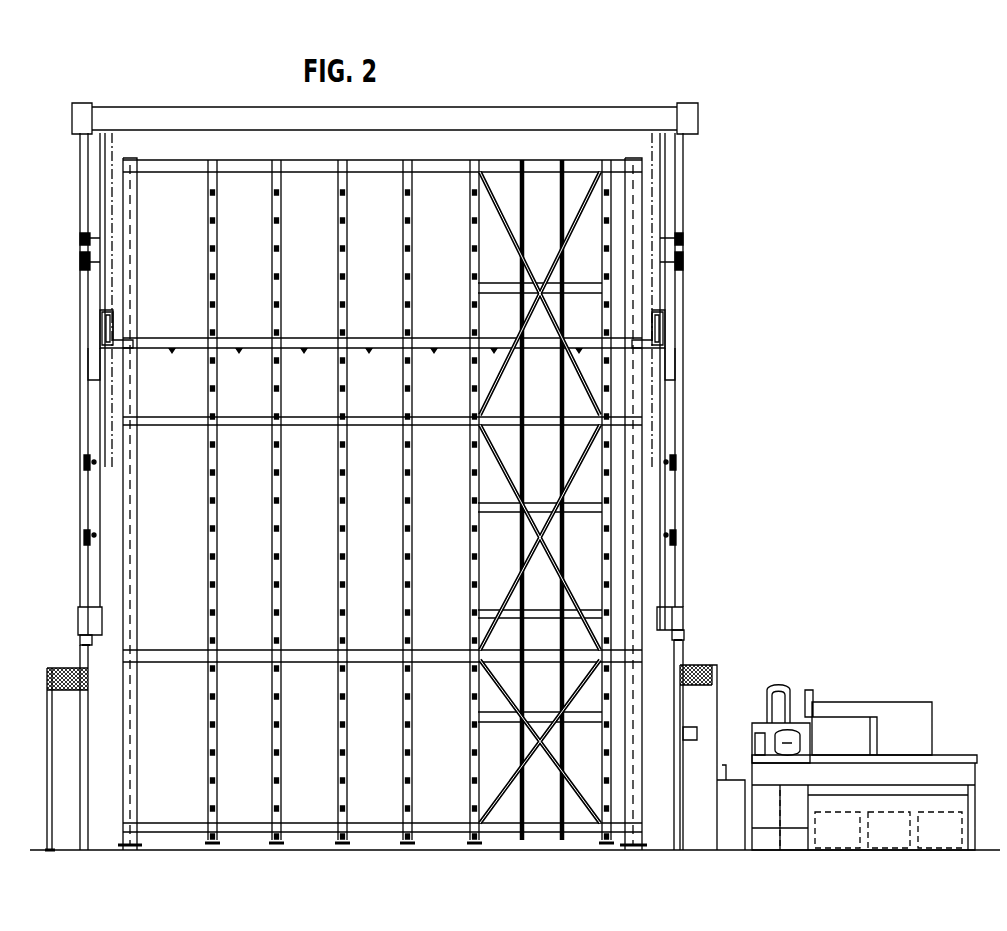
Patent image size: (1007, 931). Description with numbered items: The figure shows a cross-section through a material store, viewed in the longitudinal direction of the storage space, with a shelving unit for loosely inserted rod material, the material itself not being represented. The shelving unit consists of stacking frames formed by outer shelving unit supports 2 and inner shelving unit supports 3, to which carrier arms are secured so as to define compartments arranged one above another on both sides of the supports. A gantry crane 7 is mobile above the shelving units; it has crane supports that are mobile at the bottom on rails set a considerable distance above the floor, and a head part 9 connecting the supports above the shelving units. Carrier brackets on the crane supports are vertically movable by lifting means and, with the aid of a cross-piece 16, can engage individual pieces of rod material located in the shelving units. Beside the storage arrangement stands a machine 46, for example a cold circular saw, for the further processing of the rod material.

The outer shelving unit support 2 is at (128, 190).
The inner shelving unit support 3 is at (212, 160).
The gantry crane 7 is at (452, 104).
The head part 9 is at (587, 110).
The cross-piece 16 is at (327, 338).
The machine 46 is at (910, 712).